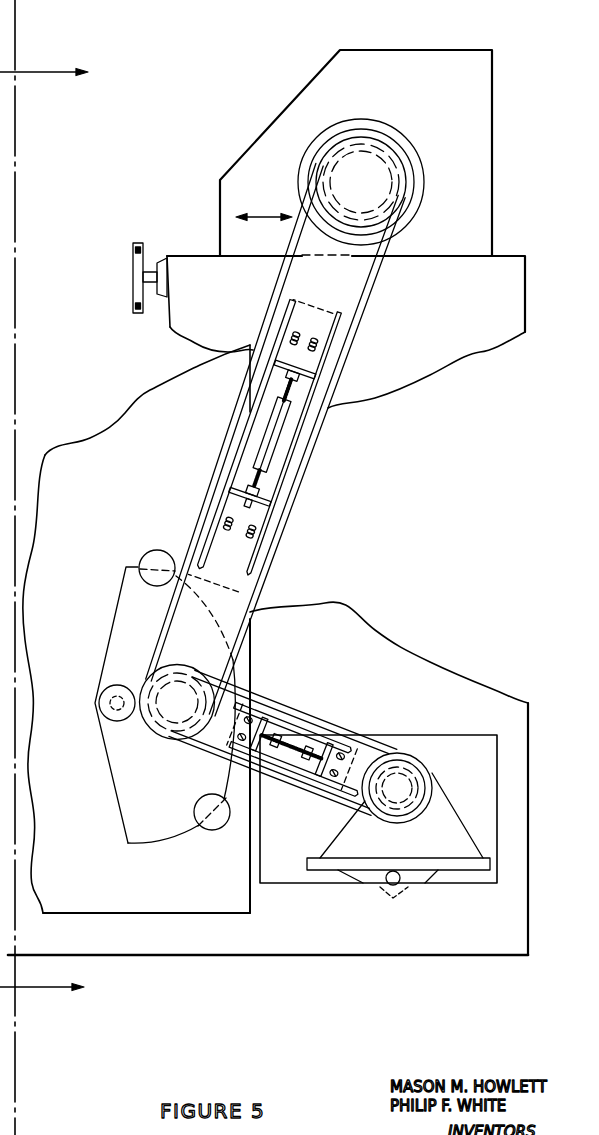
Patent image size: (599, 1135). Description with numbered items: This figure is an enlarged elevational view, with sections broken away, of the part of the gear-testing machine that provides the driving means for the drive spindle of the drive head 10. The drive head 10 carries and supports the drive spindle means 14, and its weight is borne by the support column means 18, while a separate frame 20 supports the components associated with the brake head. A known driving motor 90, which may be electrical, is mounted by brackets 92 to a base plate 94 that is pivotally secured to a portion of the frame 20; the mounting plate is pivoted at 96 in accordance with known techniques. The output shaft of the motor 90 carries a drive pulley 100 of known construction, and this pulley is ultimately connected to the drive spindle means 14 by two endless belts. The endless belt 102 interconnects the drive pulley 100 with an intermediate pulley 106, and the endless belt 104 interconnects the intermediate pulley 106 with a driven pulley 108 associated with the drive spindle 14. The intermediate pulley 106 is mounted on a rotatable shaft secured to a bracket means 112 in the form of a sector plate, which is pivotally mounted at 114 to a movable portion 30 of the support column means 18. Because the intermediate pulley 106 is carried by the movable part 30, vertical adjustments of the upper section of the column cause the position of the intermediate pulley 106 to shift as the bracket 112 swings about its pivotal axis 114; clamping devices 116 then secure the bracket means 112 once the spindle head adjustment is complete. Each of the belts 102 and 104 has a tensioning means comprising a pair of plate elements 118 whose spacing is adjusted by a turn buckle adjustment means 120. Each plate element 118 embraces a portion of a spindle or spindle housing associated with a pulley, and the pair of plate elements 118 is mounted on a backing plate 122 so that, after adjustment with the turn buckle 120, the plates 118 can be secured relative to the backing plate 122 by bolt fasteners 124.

The drive head 10 is at (298, 92).
The drive spindle means 14 is at (300, 157).
The support column means 18 is at (452, 320).
The frame 20 is at (410, 948).
The movable portion of the support column means 30 is at (95, 902).
The driving motor 90 is at (448, 774).
The brackets 92 is at (463, 852).
The base plate 94 is at (373, 861).
The pivot 96 is at (405, 884).
The drive pulley 100 is at (413, 775).
The endless belt 102 is at (295, 740).
The endless belt 104 is at (300, 478).
The intermediate pulley 106 is at (146, 721).
The driven pulley 108 is at (395, 176).
The bracket means 112 is at (118, 656).
The pivotal axis 114 is at (107, 707).
The clamping devices 116 is at (149, 556).
The plate elements 118 is at (338, 300).
The turn buckle adjustment means 120 is at (282, 427).
The backing plate 122 is at (246, 436).
The bolt fasteners 124 is at (313, 338).